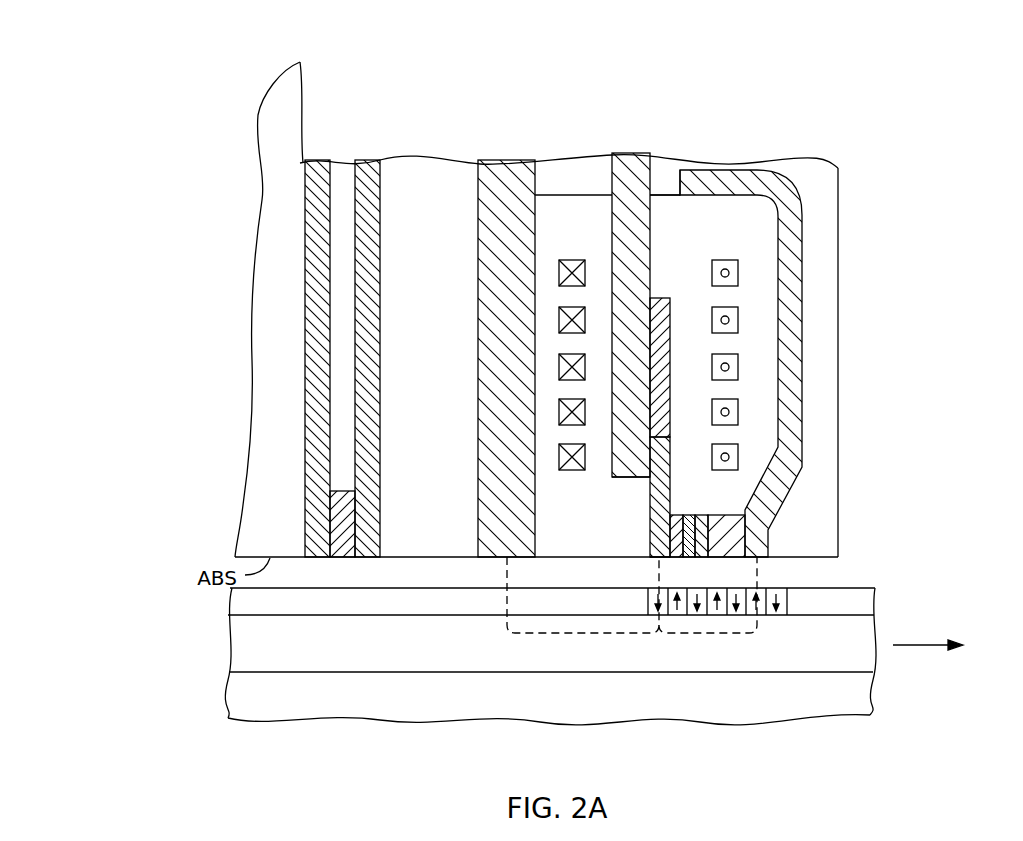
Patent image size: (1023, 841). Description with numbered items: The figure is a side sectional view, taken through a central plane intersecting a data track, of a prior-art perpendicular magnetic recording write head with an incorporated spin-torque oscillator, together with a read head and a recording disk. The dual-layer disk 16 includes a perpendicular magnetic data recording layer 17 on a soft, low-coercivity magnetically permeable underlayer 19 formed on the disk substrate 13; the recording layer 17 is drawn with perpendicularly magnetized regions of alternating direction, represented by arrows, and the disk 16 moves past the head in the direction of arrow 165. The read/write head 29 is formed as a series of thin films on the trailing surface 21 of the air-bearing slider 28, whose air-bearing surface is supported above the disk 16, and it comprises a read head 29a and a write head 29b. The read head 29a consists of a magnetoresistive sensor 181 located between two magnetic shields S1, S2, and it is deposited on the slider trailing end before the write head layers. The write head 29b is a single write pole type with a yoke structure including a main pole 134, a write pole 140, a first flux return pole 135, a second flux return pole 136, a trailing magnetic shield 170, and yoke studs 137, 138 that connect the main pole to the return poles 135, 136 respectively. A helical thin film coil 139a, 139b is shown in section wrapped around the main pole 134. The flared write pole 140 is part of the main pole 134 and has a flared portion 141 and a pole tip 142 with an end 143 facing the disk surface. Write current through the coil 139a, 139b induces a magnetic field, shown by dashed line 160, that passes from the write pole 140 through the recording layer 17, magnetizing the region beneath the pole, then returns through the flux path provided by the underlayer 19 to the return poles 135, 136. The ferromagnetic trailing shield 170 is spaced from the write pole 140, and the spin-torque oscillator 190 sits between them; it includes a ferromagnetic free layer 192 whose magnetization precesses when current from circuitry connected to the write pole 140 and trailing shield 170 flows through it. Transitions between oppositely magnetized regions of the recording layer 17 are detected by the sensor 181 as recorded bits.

The dual-layer disk 16 is at (188, 694).
The disk substrate 13 is at (872, 692).
The perpendicular magnetic data recording layer 17 is at (868, 600).
The soft magnetically permeable underlayer 19 is at (868, 637).
The trailing surface 21 is at (301, 103).
The air-bearing slider 28 is at (268, 133).
The read/write head 29 is at (800, 85).
The read head 29a is at (303, 158).
The write head 29b is at (483, 137).
The main pole 134 is at (625, 220).
The first flux return pole 135 is at (490, 237).
The second flux return pole 136 is at (793, 407).
The yoke stud 137 is at (576, 165).
The yoke stud 138 is at (657, 167).
The thin film coil section 139a is at (551, 473).
The thin film coil section 139b is at (746, 473).
The write pole 140 is at (661, 298).
The flared portion 141 is at (650, 485).
The pole tip 142 is at (652, 548).
The pole tip end 143 is at (653, 558).
The magnetic field 160 is at (531, 635).
The disk motion arrow 165 is at (921, 641).
The trailing magnetic shield 170 is at (745, 545).
The magnetoresistive read sensor 181 is at (343, 558).
The spin-torque oscillator 190 is at (707, 534).
The ferromagnetic free layer 192 is at (688, 557).
The magnetic shield S1 is at (318, 429).
The magnetic shield S2 is at (378, 437).